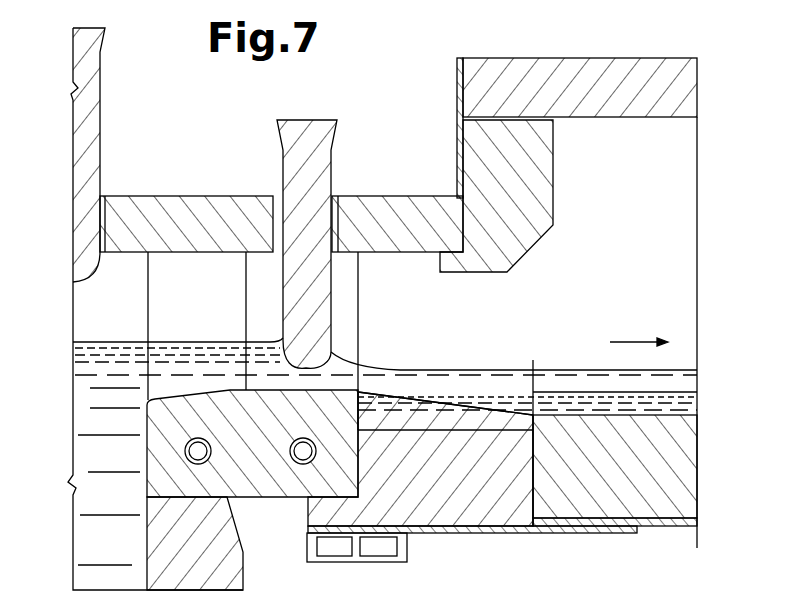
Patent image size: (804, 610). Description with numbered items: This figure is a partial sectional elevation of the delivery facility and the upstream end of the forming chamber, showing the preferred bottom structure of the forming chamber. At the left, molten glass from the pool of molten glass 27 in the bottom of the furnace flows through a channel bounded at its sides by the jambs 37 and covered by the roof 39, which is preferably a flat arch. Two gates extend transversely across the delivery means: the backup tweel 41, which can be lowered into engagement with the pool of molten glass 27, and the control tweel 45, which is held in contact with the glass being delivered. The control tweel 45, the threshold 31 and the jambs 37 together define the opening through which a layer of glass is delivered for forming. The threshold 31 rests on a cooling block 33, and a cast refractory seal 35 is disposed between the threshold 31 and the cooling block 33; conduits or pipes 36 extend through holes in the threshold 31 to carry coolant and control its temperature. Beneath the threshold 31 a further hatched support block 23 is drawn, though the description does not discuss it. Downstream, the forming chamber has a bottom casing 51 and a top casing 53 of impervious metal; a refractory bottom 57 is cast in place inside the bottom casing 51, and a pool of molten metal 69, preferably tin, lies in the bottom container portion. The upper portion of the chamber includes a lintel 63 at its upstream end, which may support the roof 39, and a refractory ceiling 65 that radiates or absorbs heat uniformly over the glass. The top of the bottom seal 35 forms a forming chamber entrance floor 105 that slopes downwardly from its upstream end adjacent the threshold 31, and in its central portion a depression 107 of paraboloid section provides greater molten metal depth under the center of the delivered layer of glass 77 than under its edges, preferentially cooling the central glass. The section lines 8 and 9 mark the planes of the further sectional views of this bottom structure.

The backup tweel 41 is at (100, 124).
The roof 39 is at (176, 197).
The control tweel 45 is at (332, 174).
The top casing 53 is at (457, 110).
The ceiling or roof 65 is at (648, 118).
The lintel 63 is at (553, 198).
The jambs 37 is at (358, 304).
The delivered layer of glass 77 is at (378, 368).
The depression 107 is at (425, 410).
The forming chamber entrance floor 105 is at (505, 420).
The pool of molten metal 69 is at (697, 404).
The refractory bottom 57 is at (692, 470).
The bottom casing 51 is at (663, 526).
The cast refractory seal 35 is at (503, 520).
The cooling block 33 is at (397, 550).
The conduits or pipes 36 is at (303, 464).
The lower support block 23 is at (243, 562).
The threshold 31 is at (240, 490).
The pool of molten glass 27 is at (116, 552).
The section line 8- 8 is at (73, 370).
The section line 9- 9 is at (513, 380).